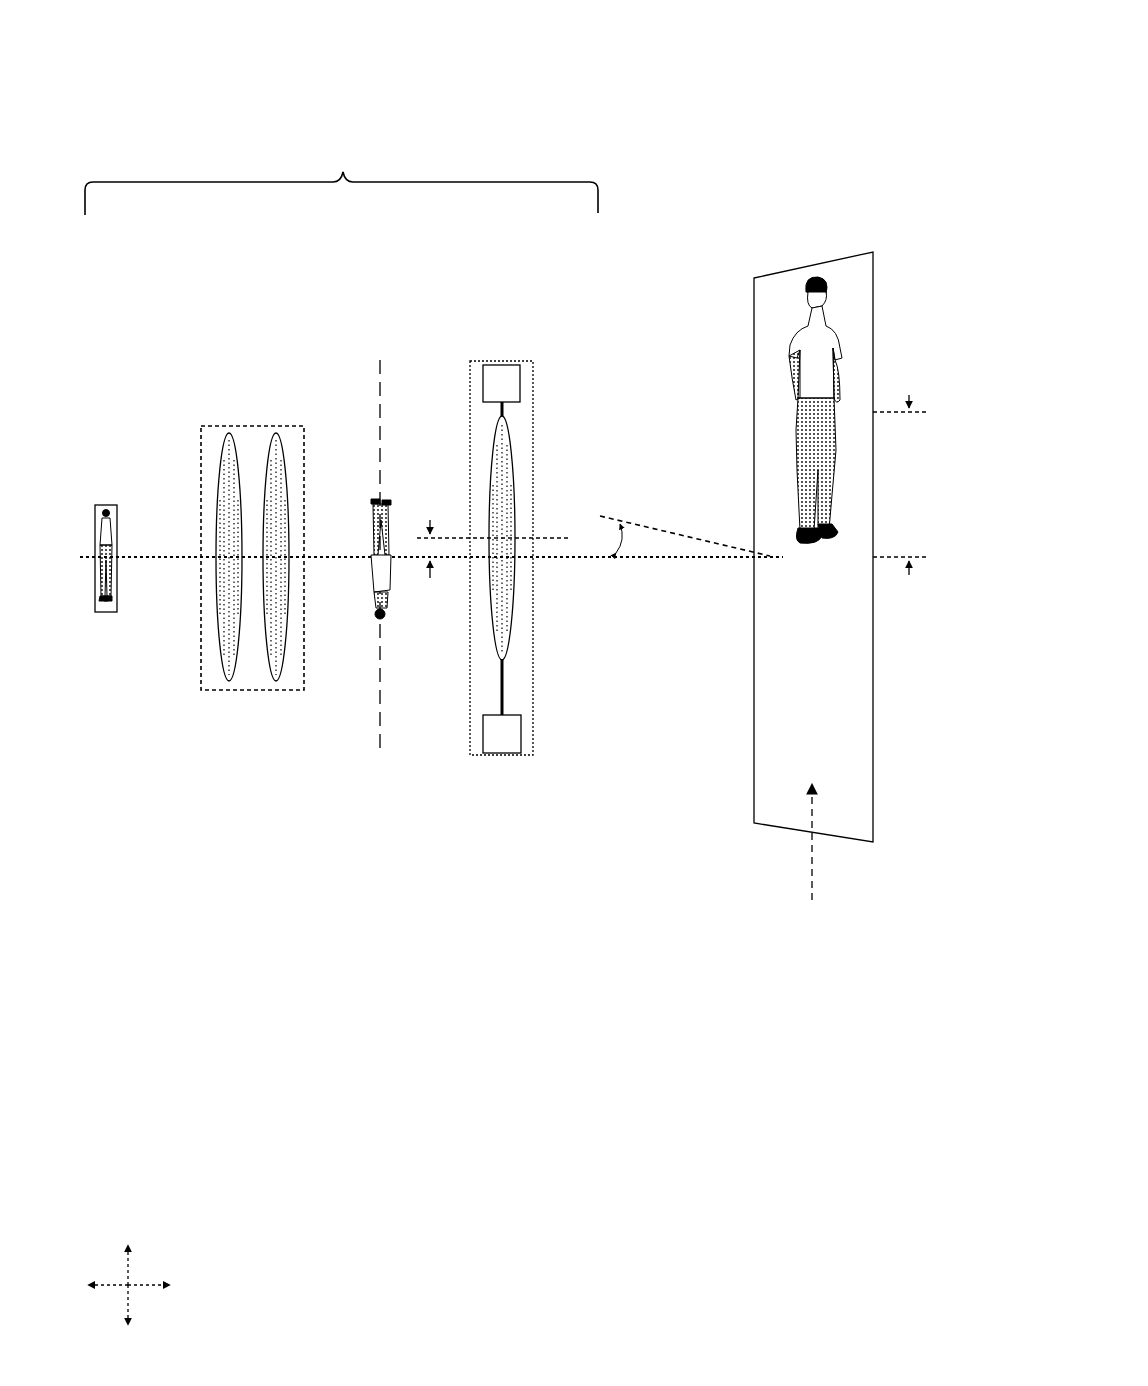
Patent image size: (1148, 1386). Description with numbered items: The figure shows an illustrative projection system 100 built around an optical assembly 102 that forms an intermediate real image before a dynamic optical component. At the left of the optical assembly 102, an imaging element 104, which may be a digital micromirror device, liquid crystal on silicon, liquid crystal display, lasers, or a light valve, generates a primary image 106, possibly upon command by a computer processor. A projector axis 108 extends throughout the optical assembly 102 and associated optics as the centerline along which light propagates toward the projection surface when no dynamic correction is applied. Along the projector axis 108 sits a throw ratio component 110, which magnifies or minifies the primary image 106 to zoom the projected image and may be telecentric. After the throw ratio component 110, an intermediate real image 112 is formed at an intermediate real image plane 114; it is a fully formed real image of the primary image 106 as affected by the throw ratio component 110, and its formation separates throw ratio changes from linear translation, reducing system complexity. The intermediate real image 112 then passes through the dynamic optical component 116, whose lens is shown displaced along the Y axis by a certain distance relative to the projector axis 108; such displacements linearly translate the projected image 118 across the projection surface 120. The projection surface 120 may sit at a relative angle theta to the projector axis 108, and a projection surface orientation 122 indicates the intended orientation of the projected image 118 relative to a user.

The projection system 100 is at (830, 28).
The optical assembly 102 is at (341, 162).
The imaging element 104 is at (108, 612).
The primary image 106 is at (108, 522).
The projector axis 108 is at (147, 557).
The throw ratio component 110 is at (225, 690).
The intermediate real image 112 is at (392, 494).
The intermediate real image plane 114 is at (379, 720).
The dynamic optical component 116 is at (495, 757).
The projected image 118 is at (808, 274).
The projection surface 120 is at (768, 812).
The projection surface orientation 122 is at (813, 909).